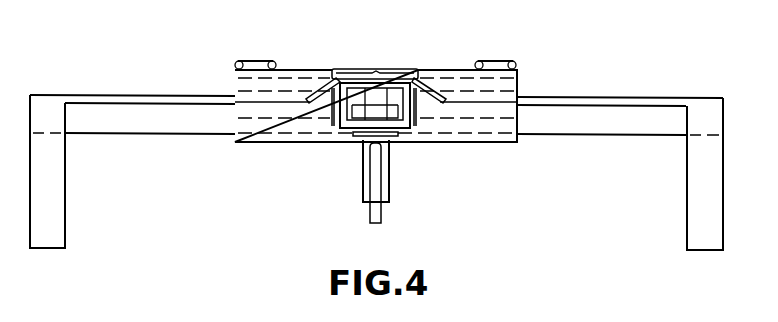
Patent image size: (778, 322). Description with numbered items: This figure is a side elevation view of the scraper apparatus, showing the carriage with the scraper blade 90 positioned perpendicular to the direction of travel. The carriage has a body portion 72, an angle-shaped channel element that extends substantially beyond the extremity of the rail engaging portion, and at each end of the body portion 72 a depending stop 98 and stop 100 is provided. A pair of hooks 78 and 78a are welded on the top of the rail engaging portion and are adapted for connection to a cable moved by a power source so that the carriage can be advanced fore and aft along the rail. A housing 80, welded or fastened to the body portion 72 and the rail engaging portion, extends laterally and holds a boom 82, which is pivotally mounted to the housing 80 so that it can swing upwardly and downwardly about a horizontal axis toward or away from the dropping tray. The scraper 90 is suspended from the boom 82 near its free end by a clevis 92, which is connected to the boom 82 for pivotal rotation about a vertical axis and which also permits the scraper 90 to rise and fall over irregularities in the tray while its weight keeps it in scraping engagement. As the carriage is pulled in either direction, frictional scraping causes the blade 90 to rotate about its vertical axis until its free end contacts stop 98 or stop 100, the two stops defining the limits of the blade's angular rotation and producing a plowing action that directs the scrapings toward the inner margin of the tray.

The body portion 72 is at (605, 117).
The hook 78 is at (263, 62).
The hook 78a is at (502, 62).
The housing 80 is at (388, 69).
The boom 82 is at (357, 122).
The scraper 90 is at (381, 212).
The clevis 92 is at (389, 180).
The depending stop 98 is at (58, 212).
The depending stop 100 is at (697, 189).